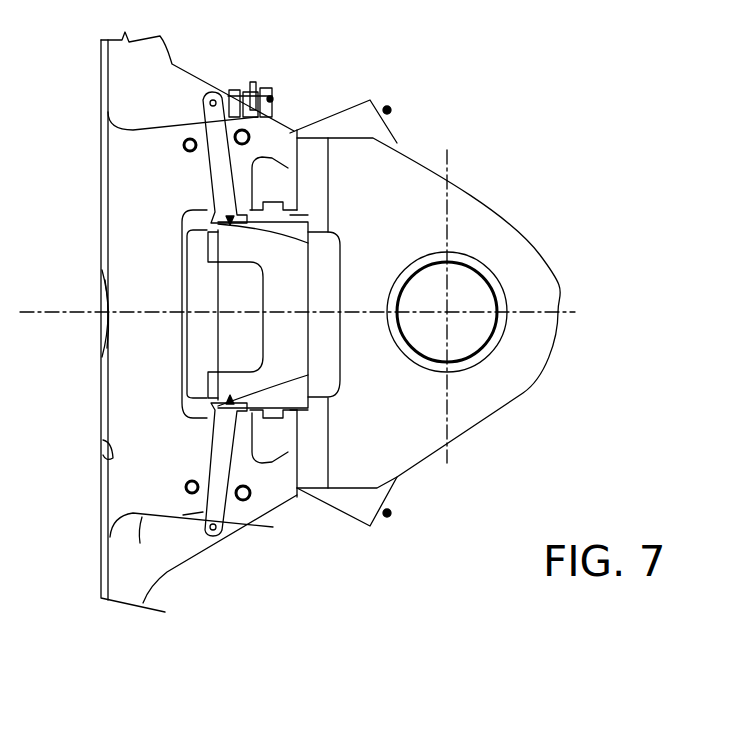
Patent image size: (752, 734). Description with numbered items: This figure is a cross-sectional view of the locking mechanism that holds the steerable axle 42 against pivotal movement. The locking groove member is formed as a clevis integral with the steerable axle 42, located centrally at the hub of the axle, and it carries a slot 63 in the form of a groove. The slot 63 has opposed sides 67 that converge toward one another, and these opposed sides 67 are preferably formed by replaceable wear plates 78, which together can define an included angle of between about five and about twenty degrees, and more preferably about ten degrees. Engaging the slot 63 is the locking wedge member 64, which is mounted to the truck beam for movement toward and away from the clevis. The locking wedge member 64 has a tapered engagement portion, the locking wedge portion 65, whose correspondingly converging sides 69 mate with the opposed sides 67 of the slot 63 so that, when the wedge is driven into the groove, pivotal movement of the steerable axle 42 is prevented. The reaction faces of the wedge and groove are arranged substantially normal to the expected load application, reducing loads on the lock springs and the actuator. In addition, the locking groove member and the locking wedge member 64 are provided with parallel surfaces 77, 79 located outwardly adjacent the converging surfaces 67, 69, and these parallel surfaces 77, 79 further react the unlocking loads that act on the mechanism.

The steerable axle 42 is at (140, 253).
The slot 63 is at (199, 366).
The locking wedge member 64 is at (277, 324).
The locking wedge portion 65 is at (309, 228).
The opposed sides 67 is at (317, 315).
The converging sides 69 is at (318, 236).
The parallel surface 77 is at (366, 304).
The parallel surface 79 is at (297, 217).
The replaceable wear plates 78 is at (270, 212).